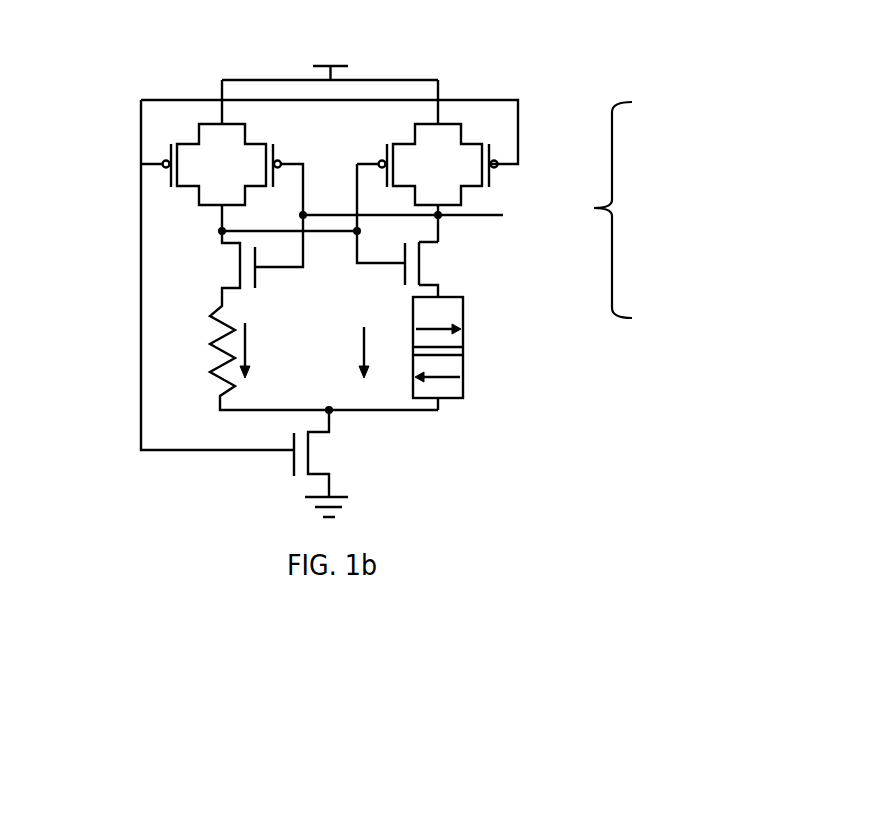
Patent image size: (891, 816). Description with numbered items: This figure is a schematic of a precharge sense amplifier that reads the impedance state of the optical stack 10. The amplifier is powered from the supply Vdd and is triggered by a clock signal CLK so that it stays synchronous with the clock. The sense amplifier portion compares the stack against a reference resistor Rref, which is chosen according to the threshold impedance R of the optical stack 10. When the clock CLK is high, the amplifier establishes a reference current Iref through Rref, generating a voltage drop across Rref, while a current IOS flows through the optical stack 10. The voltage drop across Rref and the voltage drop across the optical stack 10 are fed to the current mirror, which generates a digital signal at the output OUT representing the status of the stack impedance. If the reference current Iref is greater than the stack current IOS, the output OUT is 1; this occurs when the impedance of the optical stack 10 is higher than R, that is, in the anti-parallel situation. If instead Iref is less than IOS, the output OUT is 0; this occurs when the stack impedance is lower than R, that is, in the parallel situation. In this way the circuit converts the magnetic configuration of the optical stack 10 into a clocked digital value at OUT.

The optical stack 10 is at (474, 351).
The output of the precharge sense amplifier 1 is at (740, 152).
The output of the precharge sense amplifier 0 is at (740, 266).
The supply voltage Vdd is at (330, 71).
The clock signal CLK is at (284, 288).
The output of the precharge sense amplifier OUT is at (442, 222).
The reference resistor Rref is at (297, 355).
The reference current Iref is at (268, 350).
The optical stack current IOS is at (381, 352).